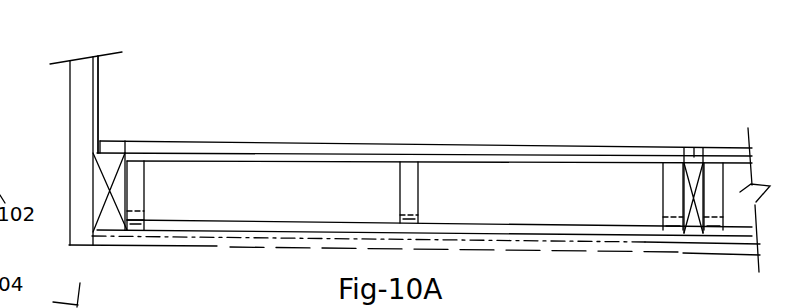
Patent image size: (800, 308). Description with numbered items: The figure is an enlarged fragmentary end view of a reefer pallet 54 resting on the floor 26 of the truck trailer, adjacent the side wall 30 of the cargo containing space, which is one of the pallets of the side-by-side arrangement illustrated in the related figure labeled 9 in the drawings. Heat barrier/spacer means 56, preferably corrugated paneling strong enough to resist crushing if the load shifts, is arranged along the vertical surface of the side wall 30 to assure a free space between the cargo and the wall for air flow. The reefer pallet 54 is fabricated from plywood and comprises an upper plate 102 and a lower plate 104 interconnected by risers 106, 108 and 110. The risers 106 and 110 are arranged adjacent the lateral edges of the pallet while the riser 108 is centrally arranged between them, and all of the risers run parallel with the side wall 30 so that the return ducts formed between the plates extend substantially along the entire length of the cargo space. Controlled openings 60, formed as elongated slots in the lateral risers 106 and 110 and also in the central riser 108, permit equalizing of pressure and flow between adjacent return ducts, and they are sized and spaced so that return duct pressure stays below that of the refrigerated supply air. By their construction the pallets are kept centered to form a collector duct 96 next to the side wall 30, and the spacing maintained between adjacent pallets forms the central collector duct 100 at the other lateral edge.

The base corner 9 is at (137, 238).
The floor 26 is at (265, 248).
The side wall 30 is at (69, 114).
The reefer pallet 54 is at (332, 143).
The heat barrier/spacer means 56 is at (99, 93).
The controlled openings 60 is at (143, 221).
The collector duct 96 is at (107, 217).
The central collector duct 100 is at (692, 238).
The upper plate 102 is at (533, 136).
The lower plate 104 is at (549, 230).
The riser 106 is at (144, 183).
The central riser 108 is at (419, 173).
The riser 110 is at (663, 203).